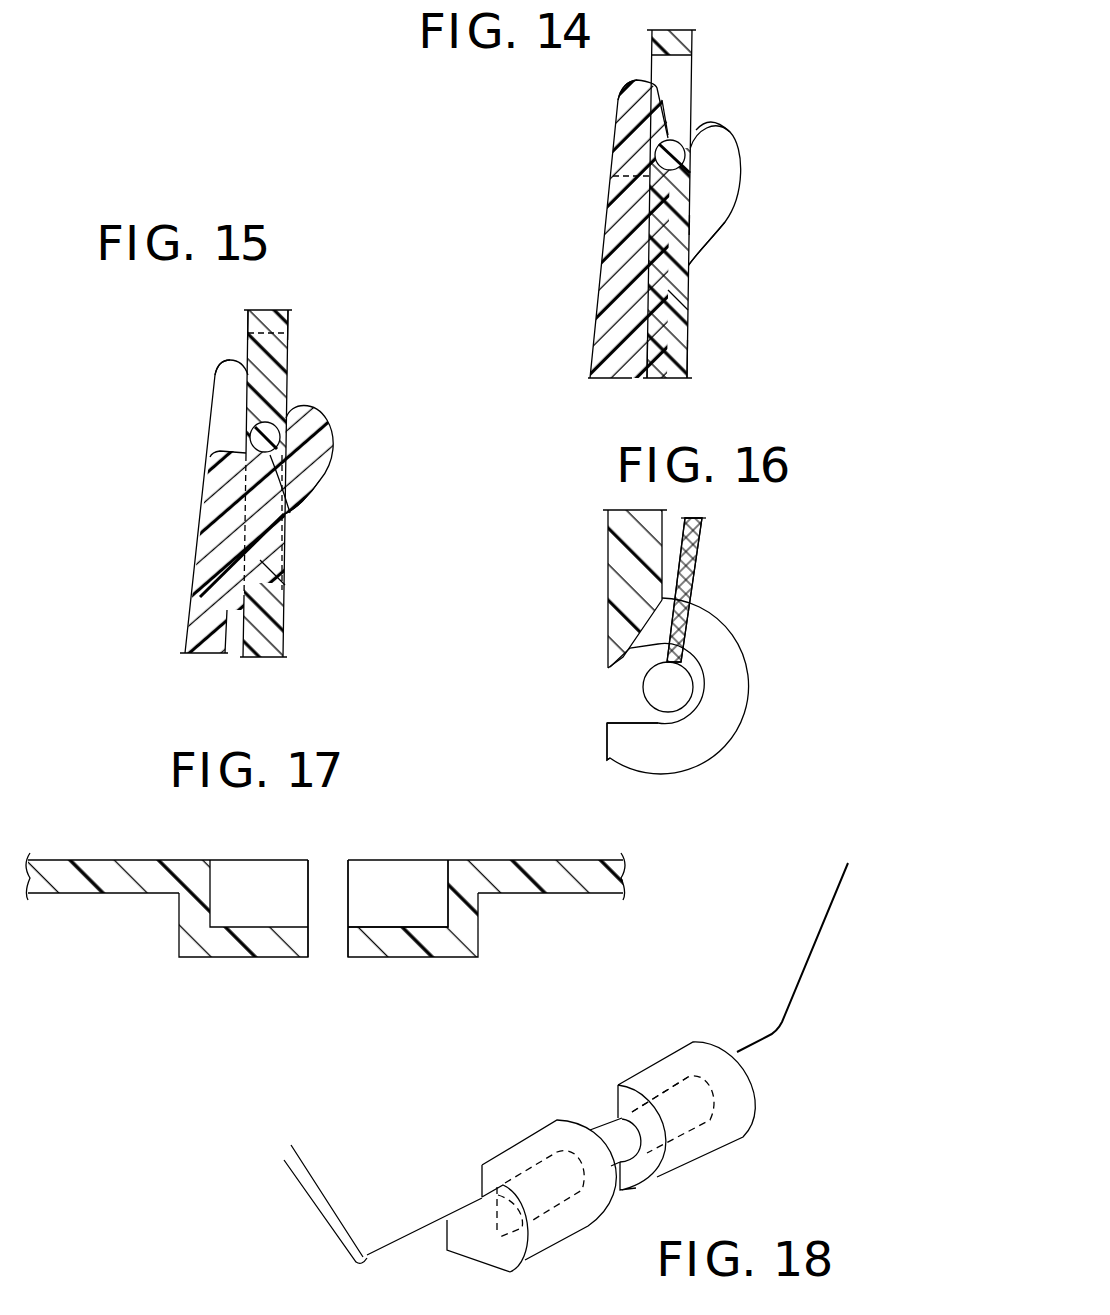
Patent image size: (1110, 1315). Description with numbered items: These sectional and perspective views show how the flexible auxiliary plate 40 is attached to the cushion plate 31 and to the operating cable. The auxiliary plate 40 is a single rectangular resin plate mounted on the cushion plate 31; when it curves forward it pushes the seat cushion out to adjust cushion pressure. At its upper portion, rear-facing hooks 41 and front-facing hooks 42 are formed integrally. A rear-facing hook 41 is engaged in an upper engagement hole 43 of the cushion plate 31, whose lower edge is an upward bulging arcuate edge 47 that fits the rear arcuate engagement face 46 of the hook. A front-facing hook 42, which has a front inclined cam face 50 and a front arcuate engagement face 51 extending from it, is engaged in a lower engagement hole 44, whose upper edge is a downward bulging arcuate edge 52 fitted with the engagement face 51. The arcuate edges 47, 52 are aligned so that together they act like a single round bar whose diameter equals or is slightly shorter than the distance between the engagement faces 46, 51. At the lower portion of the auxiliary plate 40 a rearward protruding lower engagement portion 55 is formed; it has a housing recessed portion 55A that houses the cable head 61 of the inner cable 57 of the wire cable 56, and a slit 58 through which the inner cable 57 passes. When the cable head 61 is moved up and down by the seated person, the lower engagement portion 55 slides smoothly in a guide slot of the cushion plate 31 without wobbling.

In FIG. 14, the cushion plate 31 is at (687, 356).
In FIG. 15, the cushion plate 31 is at (248, 322).
In FIG. 14, the auxiliary plate 40 is at (598, 274).
In FIG. 15, the auxiliary plate 40 is at (192, 582).
In FIG. 16, the auxiliary plate 40 is at (608, 562).
In FIG. 17, the auxiliary plate 40 is at (553, 893).
In FIG. 18, the auxiliary plate 40 is at (810, 962).
In FIG. 14, the rear-facing hook 41 is at (620, 113).
In FIG. 15, the rear-facing hook 41 is at (217, 385).
In FIG. 14, the front-facing hook 42 is at (725, 157).
In FIG. 15, the front-facing hook 42 is at (323, 447).
In FIG. 14, the upper engagement hole 43 is at (680, 68).
In FIG. 15, the upper engagement hole 43 is at (282, 345).
In FIG. 14, the lower engagement hole 44 is at (676, 287).
In FIG. 15, the lower engagement hole 44 is at (270, 568).
In FIG. 14, the rear arcuate engagement face 46 is at (650, 150).
In FIG. 15, the rear arcuate engagement face 46 is at (250, 419).
In FIG. 14, the arcuate edge 47 is at (690, 132).
In FIG. 15, the arcuate edge 47 is at (286, 397).
In FIG. 14, the front inclined cam face 50 is at (690, 145).
In FIG. 14, the front arcuate engagement face 51 is at (690, 175).
In FIG. 15, the front arcuate engagement face 51 is at (313, 475).
In FIG. 14, the arcuate edge 52 is at (689, 225).
In FIG. 15, the arcuate edge 52 is at (308, 512).
In FIG. 16, the lower engagement portion 55 is at (733, 630).
In FIG. 17, the lower engagement portion 55 is at (443, 953).
In FIG. 18, the lower engagement portion 55 is at (713, 1145).
In FIG. 16, the housing recessed portion 55A is at (632, 700).
In FIG. 17, the housing recessed portion 55A is at (380, 887).
In FIG. 18, the housing recessed portion 55A is at (707, 1080).
In FIG. 16, the wire cable 56 is at (684, 590).
In FIG. 16, the inner cable 57 is at (700, 548).
In FIG. 16, the slit 58 is at (717, 700).
In FIG. 17, the slit 58 is at (332, 942).
In FIG. 18, the slit 58 is at (645, 1167).
In FIG. 16, the cable head 61 is at (655, 688).